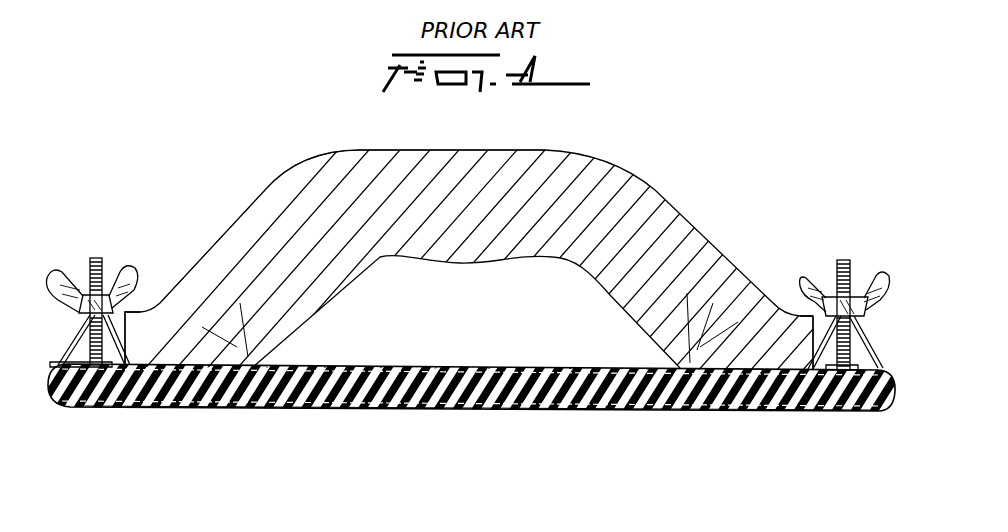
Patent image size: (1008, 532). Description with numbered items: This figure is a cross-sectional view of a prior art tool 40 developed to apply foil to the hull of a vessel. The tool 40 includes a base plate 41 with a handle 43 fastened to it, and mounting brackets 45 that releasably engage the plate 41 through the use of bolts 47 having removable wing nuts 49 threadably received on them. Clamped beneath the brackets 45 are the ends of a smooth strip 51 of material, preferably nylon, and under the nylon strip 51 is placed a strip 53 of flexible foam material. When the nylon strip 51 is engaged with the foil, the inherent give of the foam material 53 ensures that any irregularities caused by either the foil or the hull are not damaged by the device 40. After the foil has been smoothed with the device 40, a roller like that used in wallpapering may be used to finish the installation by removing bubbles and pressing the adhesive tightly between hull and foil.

The tool 40 is at (643, 177).
The base plate 41 is at (478, 369).
The handle 43 is at (287, 217).
The mounting brackets 45 is at (141, 311).
The bolts 47 is at (105, 264).
The wing nuts 49 is at (72, 278).
The smooth strip 51 is at (507, 411).
The strip of flexible foam material 53 is at (592, 411).